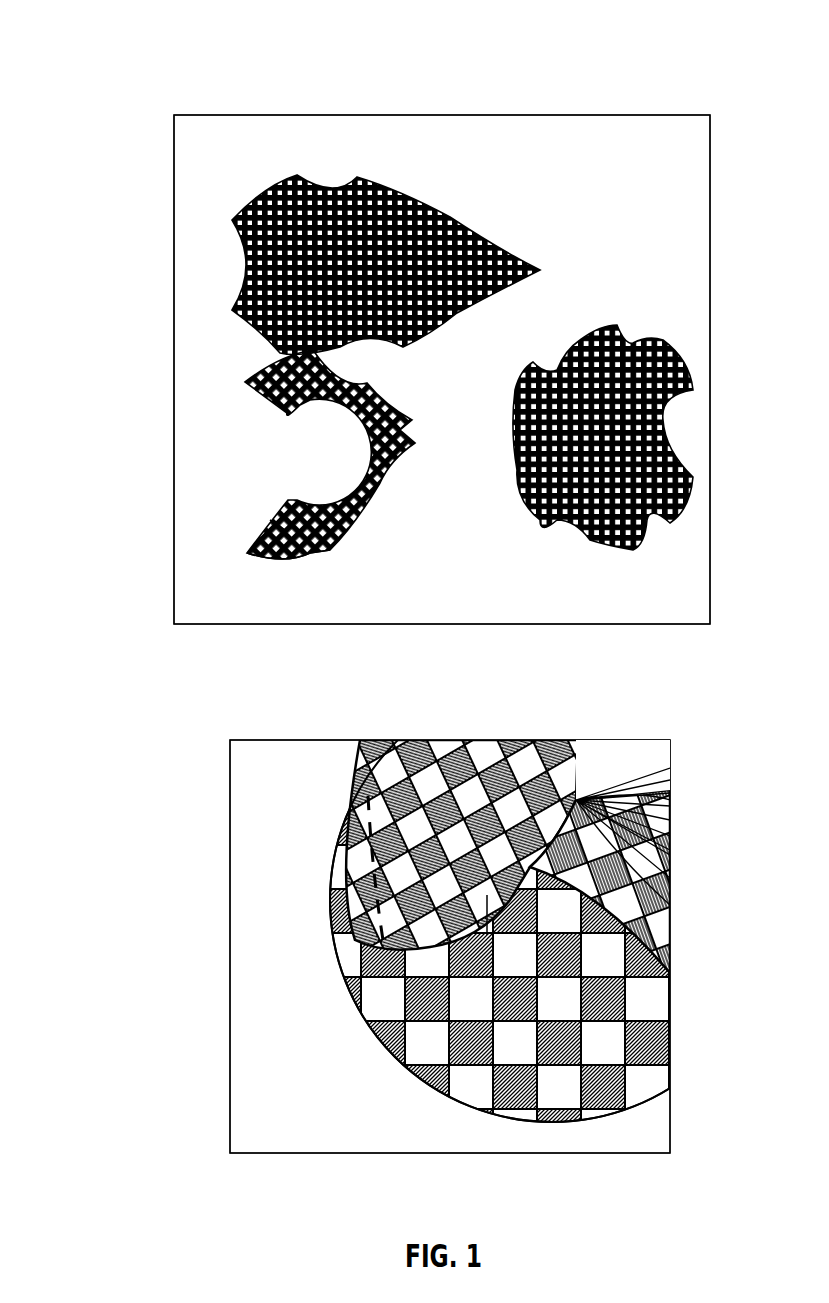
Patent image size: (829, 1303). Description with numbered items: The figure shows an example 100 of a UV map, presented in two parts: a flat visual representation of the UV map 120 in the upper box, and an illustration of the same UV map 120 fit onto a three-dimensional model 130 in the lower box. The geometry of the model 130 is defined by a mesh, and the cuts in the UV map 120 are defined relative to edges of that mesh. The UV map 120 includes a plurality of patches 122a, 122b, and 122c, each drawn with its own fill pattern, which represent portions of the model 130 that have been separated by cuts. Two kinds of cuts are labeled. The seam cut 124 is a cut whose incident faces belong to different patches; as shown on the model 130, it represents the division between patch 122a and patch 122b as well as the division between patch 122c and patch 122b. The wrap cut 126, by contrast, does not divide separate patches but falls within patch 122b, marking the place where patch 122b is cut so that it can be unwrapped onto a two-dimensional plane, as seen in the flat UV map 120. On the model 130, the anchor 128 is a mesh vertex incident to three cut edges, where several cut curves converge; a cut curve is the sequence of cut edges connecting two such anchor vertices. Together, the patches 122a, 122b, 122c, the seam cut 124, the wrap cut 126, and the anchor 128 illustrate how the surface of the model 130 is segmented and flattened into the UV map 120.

The example 100 is at (148, 34).
The UV map 120 is at (197, 114).
The patch 122a is at (427, 238).
The patch 122b is at (390, 423).
The patch 122c is at (636, 367).
The seam cut 124 is at (305, 560).
The wrap cut 126 is at (269, 521).
The anchor 128 is at (487, 895).
The three-dimensional model 130 is at (275, 740).